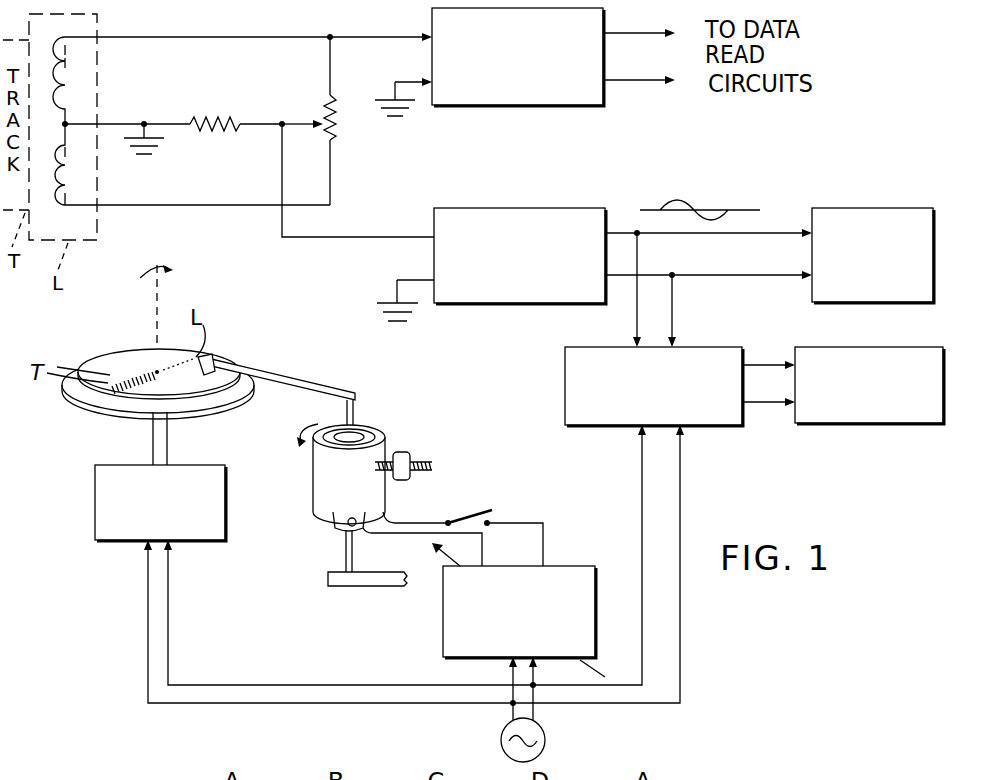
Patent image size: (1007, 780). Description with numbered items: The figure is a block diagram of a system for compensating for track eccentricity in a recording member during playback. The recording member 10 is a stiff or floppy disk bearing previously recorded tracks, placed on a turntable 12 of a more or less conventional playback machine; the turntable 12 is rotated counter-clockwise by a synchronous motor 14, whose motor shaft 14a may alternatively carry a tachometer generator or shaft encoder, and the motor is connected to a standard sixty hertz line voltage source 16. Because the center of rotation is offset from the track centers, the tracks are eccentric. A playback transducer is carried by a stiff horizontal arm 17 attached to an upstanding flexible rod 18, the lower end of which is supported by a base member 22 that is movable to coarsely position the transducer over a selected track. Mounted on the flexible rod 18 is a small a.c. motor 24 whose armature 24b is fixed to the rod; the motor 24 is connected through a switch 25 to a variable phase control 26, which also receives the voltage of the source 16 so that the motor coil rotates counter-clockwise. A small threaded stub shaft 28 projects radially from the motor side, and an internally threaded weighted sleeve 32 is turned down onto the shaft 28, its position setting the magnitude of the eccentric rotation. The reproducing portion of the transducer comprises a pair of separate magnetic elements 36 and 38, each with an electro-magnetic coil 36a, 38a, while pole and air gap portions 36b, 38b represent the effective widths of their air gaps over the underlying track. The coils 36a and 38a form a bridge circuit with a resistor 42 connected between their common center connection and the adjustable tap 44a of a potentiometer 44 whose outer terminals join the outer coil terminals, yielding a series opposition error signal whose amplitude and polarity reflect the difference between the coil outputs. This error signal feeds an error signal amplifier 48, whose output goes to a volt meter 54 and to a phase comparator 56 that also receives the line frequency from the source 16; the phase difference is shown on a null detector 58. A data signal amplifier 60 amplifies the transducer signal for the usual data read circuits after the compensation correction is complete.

The recording member 10 is at (97, 368).
The turntable 12 is at (75, 397).
The synchronous motor 14 is at (103, 528).
The motor shaft 14a is at (153, 442).
The line voltage source 16 is at (505, 745).
The horizontal arm 17 is at (268, 372).
The flexible rod 18 is at (345, 541).
The base member 22 is at (337, 582).
The a.c. motor 24 is at (330, 479).
The armature 24b is at (445, 427).
The switch 25 is at (448, 521).
The variable phase control 26 is at (452, 645).
The threaded stub shaft 28 is at (432, 476).
The weighted sleeve 32 is at (410, 456).
The magnetic element 36 is at (94, 93).
The electro-magnetic coil 36a is at (64, 50).
The pole and air gap portion 36b is at (64, 63).
The magnetic element 38 is at (96, 193).
The electro-magnetic coil 38a is at (64, 152).
The pole and air gap portion 38b is at (65, 198).
The resistor 42 is at (218, 113).
The potentiometer 44 is at (335, 137).
The adjustable tap 44a is at (300, 120).
The error signal amplifier 48 is at (456, 208).
The volt meter 54 is at (826, 212).
The phase comparator 56 is at (565, 370).
The null detector 58 is at (863, 413).
The data signal amplifier 60 is at (460, 107).